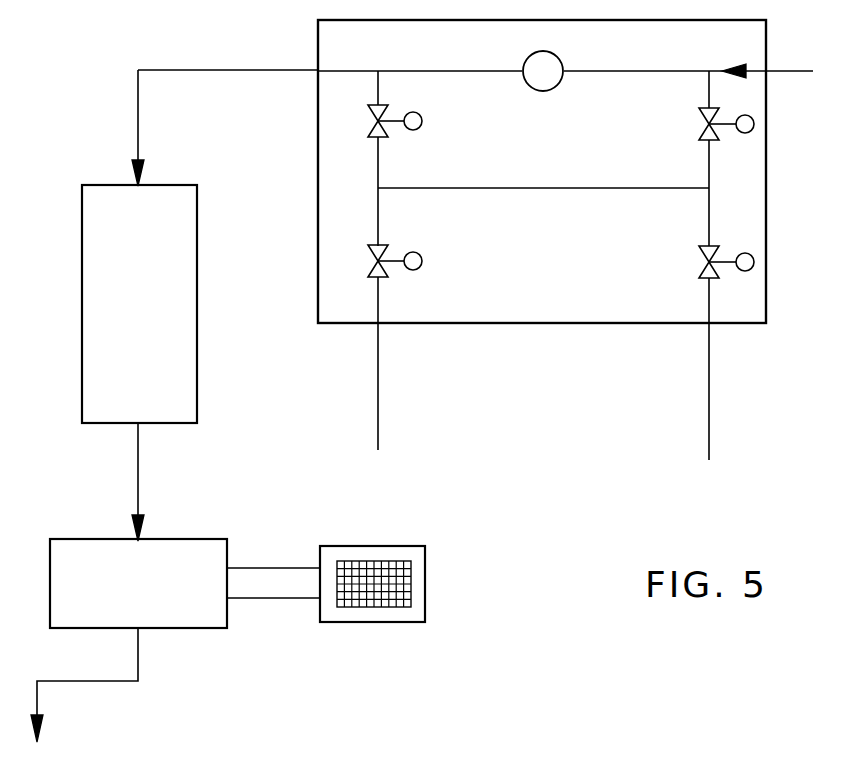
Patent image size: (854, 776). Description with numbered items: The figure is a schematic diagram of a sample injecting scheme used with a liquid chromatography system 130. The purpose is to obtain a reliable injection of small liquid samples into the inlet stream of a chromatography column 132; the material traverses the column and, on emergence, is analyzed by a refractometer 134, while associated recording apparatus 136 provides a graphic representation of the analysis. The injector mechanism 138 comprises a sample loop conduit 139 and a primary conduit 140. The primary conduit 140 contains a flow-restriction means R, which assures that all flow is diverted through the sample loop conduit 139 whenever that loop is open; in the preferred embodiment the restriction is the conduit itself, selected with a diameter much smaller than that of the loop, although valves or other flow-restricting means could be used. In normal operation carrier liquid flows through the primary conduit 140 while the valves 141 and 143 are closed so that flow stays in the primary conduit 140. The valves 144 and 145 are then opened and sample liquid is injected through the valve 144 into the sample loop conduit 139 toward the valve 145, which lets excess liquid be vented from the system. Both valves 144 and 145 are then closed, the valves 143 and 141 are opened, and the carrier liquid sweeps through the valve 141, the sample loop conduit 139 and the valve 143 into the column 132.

The liquid chromatography system 130 is at (544, 438).
The chromatography column 132 is at (197, 368).
The refractometer 134 is at (185, 540).
The recording apparatus 136 is at (385, 546).
The injector mechanism 138 is at (554, 328).
The sample loop conduit 139 is at (461, 183).
The primary conduit 140 is at (649, 73).
The valve 141 is at (706, 125).
The valve 143 is at (375, 123).
The valve 144 is at (386, 266).
The valve 145 is at (705, 266).